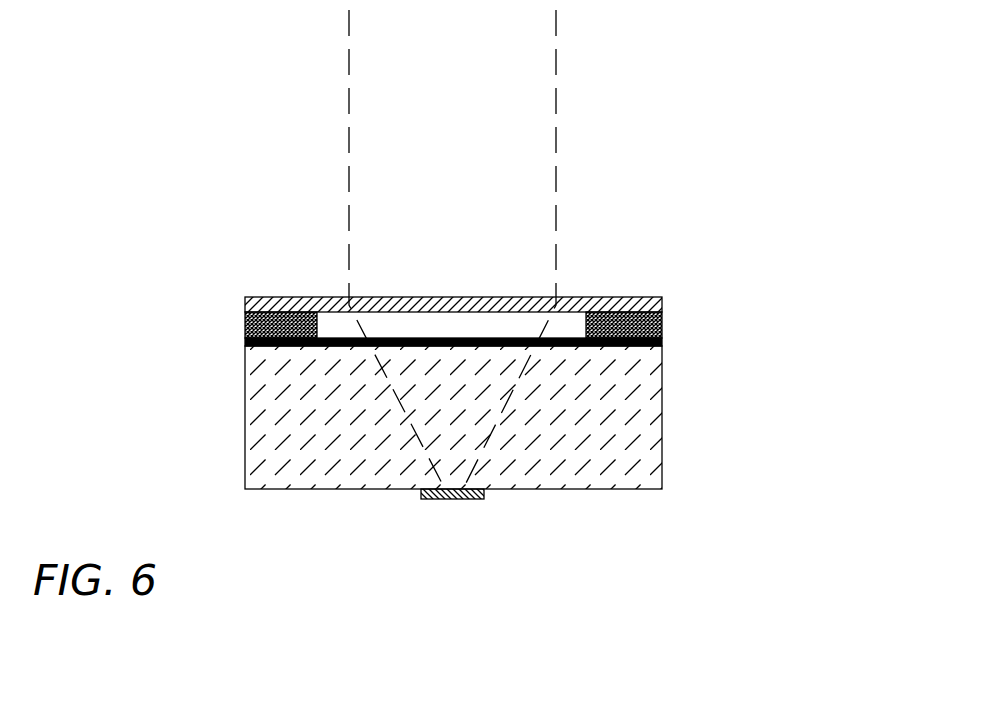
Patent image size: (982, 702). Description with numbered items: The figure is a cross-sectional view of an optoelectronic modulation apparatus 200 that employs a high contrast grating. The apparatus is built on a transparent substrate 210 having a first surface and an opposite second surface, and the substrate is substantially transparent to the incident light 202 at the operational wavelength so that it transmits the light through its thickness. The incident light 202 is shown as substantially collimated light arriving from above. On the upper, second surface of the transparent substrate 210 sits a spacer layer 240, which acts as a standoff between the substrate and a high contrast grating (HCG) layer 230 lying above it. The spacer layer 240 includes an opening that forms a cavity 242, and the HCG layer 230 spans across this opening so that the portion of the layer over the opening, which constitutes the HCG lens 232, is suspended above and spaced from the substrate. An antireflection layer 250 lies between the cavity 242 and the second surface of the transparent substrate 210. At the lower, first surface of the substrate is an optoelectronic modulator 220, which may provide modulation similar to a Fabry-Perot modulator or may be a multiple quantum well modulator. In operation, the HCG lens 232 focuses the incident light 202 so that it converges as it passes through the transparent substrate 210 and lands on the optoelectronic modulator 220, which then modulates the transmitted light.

The optoelectronic modulation apparatus 200 is at (741, 96).
The incident light 202 is at (556, 97).
The transparent substrate 210 is at (662, 418).
The optoelectronic modulator 220 is at (450, 499).
The high contrast grating (HCG) layer 230 is at (245, 306).
The HCG lens 232 is at (390, 283).
The spacer layer 240 is at (662, 322).
The cavity 242 is at (571, 322).
The antireflection layer 250 is at (245, 342).